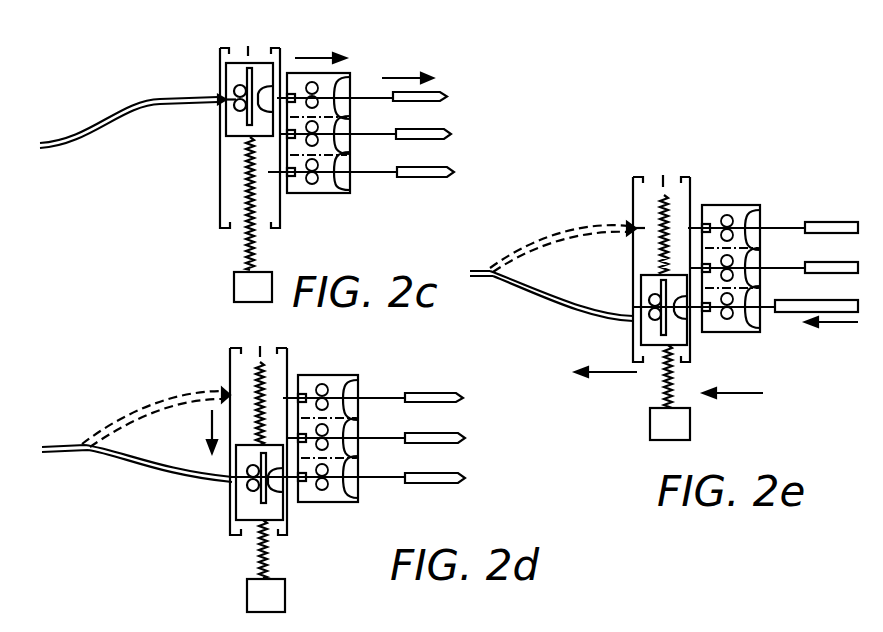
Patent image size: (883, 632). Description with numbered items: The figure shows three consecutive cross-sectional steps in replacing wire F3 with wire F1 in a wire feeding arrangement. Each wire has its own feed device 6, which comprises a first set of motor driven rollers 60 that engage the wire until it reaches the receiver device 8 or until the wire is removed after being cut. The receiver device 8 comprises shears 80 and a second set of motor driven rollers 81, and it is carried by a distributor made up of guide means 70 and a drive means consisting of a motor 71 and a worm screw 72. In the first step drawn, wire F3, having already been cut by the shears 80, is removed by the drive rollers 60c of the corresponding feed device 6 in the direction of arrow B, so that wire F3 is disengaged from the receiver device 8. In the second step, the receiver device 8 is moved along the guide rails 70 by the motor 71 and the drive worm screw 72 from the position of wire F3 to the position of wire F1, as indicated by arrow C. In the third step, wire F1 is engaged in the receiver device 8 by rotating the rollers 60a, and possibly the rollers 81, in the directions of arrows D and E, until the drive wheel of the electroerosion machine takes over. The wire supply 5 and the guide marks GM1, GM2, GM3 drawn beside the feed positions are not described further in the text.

In FIG. 2C, the cable 5 is at (146, 100).
In FIG. 2D, the cable 5 is at (130, 472).
In FIG. 2E, the cable 5 is at (553, 304).
In FIG. 2C, the feed device 6 is at (335, 196).
In FIG. 2D, the feed device 6 is at (347, 505).
In FIG. 2E, the feed device 6 is at (755, 333).
In FIG. 2C, the receiver device 8 is at (233, 72).
In FIG. 2D, the receiver device 8 is at (233, 462).
In FIG. 2E, the receiver device 8 is at (641, 290).
In FIG. 2C, the motor driven rollers 60 is at (315, 182).
In FIG. 2D, the motor driven rollers 60 is at (325, 490).
In FIG. 2E, the rollers 60a is at (720, 318).
In FIG. 2E, the drive rollers 60c is at (727, 215).
In FIG. 2C, the guide means 70 is at (220, 180).
In FIG. 2D, the guide means 70 is at (235, 498).
In FIG. 2E, the guide means 70 is at (635, 323).
In FIG. 2C, the motor 71 is at (247, 288).
In FIG. 2D, the motor 71 is at (255, 596).
In FIG. 2E, the motor 71 is at (668, 415).
In FIG. 2C, the worm screw 72 is at (247, 247).
In FIG. 2D, the worm screw 72 is at (264, 557).
In FIG. 2E, the worm screw 72 is at (660, 383).
In FIG. 2C, the shears 80 is at (252, 88).
In FIG. 2D, the shears 80 is at (263, 497).
In FIG. 2E, the shears 80 is at (663, 328).
In FIG. 2C, the rollers 81 is at (234, 112).
In FIG. 2D, the rollers 81 is at (232, 494).
In FIG. 2E, the rollers 81 is at (647, 286).
In FIG. 2C, the guide mark 1 GM1 is at (449, 170).
In FIG. 2D, the guide mark 1 GM1 is at (443, 477).
In FIG. 2E, the guide mark 1 GM1 is at (820, 300).
In FIG. 2C, the guide mark 2 GM2 is at (446, 132).
In FIG. 2D, the guide mark 2 GM2 is at (432, 437).
In FIG. 2E, the guide mark 2 GM2 is at (832, 262).
In FIG. 2C, the guide mark 3 GM3 is at (441, 94).
In FIG. 2D, the guide mark 3 GM3 is at (418, 393).
In FIG. 2E, the guide mark 3 GM3 is at (832, 222).
In FIG. 2C, the wire F1 is at (363, 175).
In FIG. 2D, the wire F1 is at (377, 480).
In FIG. 2E, the wire F1 is at (762, 311).
In FIG. 2C, the wire F3 is at (363, 97).
In FIG. 2D, the wire F3 is at (380, 395).
In FIG. 2E, the wire F3 is at (773, 230).
In FIG. 2C, the arrow B is at (307, 55).
In FIG. 2D, the direction C is at (211, 425).
In FIG. 2E, the direction D is at (733, 395).
In FIG. 2E, the direction E is at (620, 376).